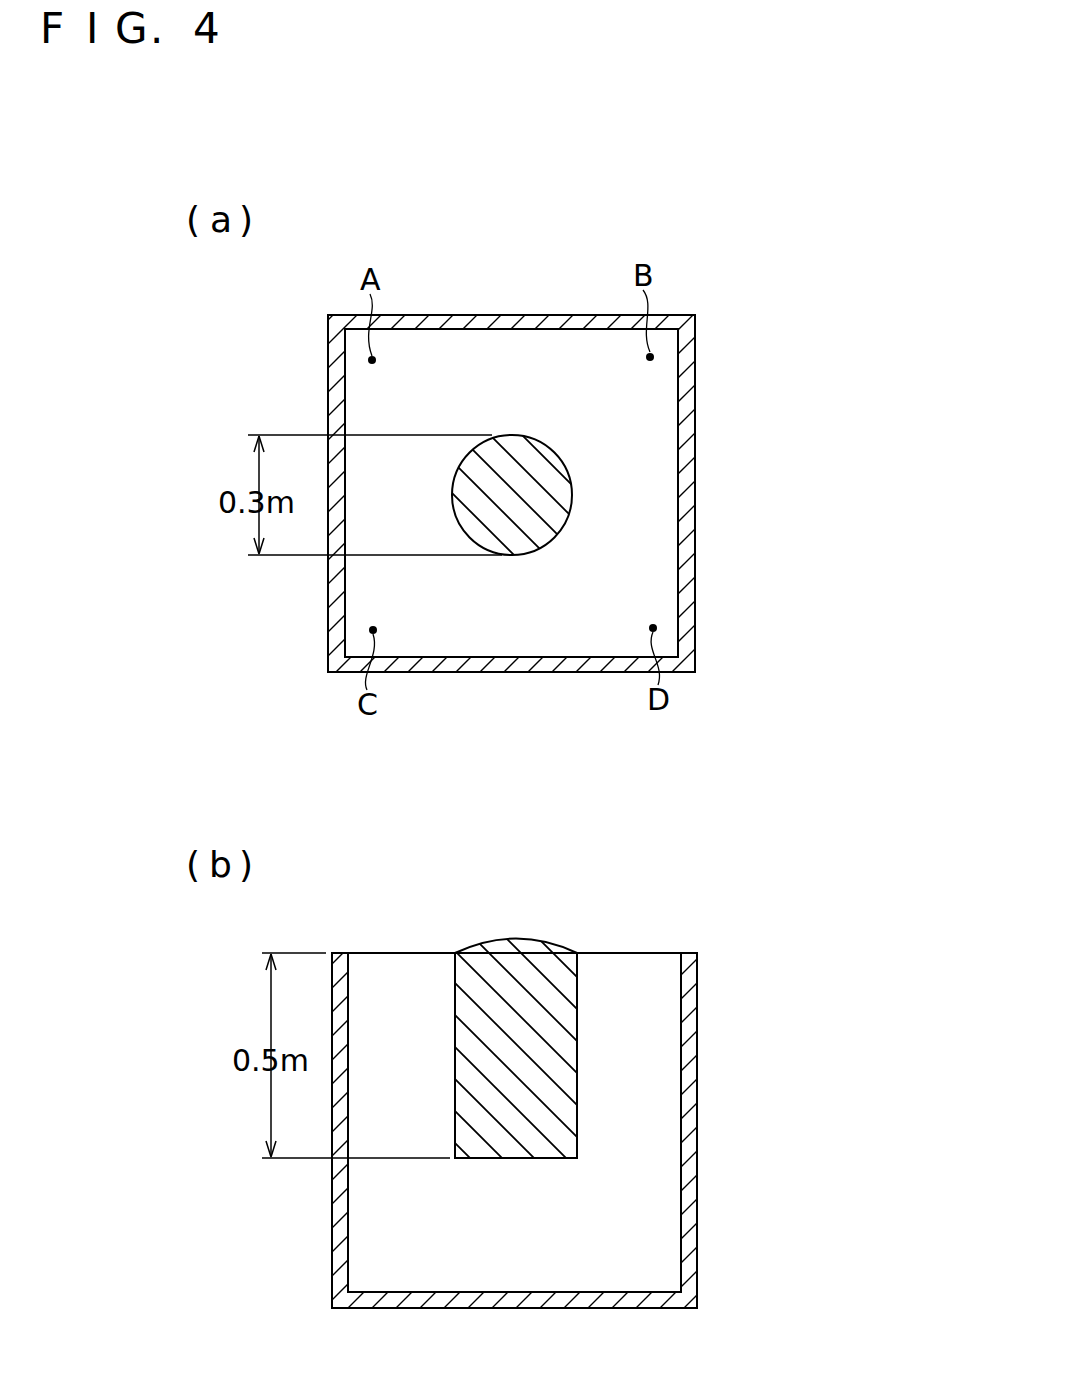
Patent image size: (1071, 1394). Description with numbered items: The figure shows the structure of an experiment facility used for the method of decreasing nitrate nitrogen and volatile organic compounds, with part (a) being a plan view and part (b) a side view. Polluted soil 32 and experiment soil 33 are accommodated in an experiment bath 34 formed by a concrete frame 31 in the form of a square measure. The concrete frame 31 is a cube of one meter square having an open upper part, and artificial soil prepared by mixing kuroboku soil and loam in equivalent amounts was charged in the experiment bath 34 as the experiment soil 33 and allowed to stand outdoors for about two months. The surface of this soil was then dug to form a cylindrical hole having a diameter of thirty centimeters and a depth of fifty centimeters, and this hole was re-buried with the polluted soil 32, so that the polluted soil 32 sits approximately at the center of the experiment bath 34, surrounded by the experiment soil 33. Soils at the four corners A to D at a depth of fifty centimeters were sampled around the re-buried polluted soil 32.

The concrete frame 31 is at (690, 352).
The polluted soil 32 is at (543, 462).
The experiment soil 33 is at (623, 553).
The experiment bath 34 is at (313, 630).